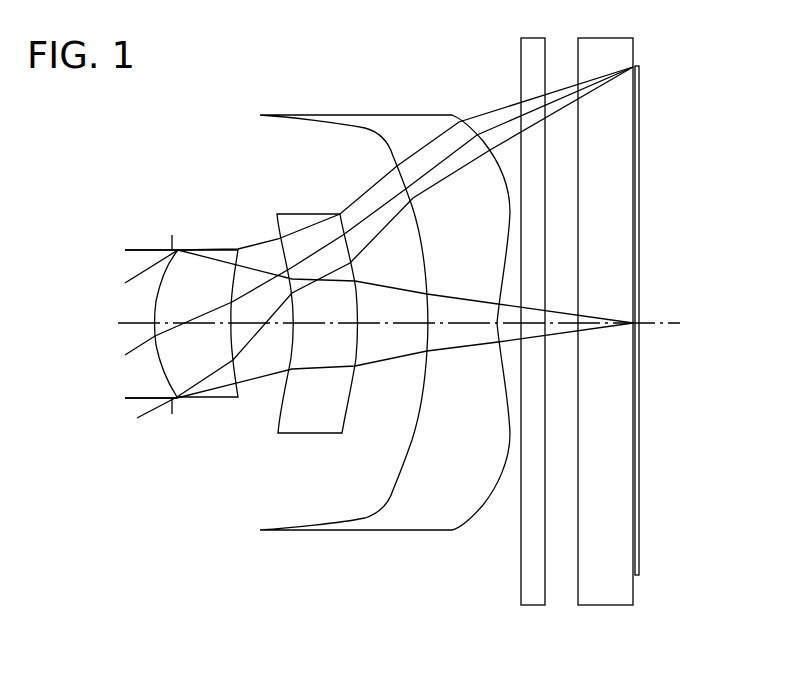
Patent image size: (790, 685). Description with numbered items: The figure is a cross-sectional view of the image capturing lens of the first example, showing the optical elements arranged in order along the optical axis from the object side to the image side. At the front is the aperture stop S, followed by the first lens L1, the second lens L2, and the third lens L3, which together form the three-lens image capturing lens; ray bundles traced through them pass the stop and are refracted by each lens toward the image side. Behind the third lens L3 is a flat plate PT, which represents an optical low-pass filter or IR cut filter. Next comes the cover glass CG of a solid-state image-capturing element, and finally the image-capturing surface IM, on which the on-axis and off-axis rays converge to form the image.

The aperture stop S is at (170, 410).
The first lens L1 is at (208, 403).
The second lens L2 is at (308, 395).
The third lens L3 is at (410, 522).
The optical low-pass filter or IR cut filter PT is at (533, 597).
The cover glass CG is at (610, 595).
The image-capturing surface IM is at (642, 563).